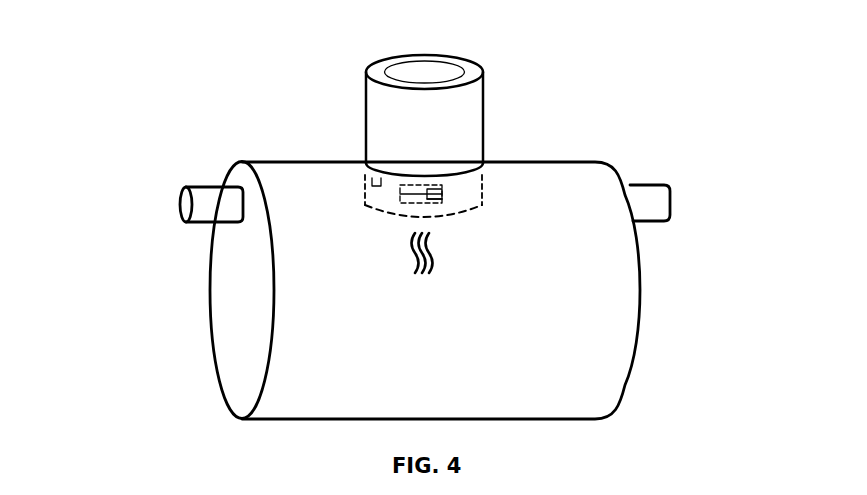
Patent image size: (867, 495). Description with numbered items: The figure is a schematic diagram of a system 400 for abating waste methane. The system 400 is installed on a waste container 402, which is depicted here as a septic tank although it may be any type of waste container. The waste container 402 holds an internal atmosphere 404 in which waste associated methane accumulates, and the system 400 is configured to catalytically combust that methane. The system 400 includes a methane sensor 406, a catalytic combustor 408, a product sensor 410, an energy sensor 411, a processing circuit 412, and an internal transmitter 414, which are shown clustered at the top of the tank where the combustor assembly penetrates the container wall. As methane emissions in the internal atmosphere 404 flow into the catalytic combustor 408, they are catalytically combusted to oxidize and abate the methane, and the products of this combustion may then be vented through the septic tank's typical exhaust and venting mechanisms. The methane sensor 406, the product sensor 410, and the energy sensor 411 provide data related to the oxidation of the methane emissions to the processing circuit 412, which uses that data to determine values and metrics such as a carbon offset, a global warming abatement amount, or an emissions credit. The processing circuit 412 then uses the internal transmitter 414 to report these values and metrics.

The system 400 is at (483, 176).
The waste container 402 is at (210, 298).
The internal atmosphere 404 is at (440, 283).
The methane sensor 406 is at (366, 66).
The catalytic combustor 408 is at (400, 199).
The product sensor 410 is at (442, 197).
The energy sensor 411 is at (442, 190).
The processing circuit 412 is at (450, 203).
The internal transmitter 414 is at (365, 168).